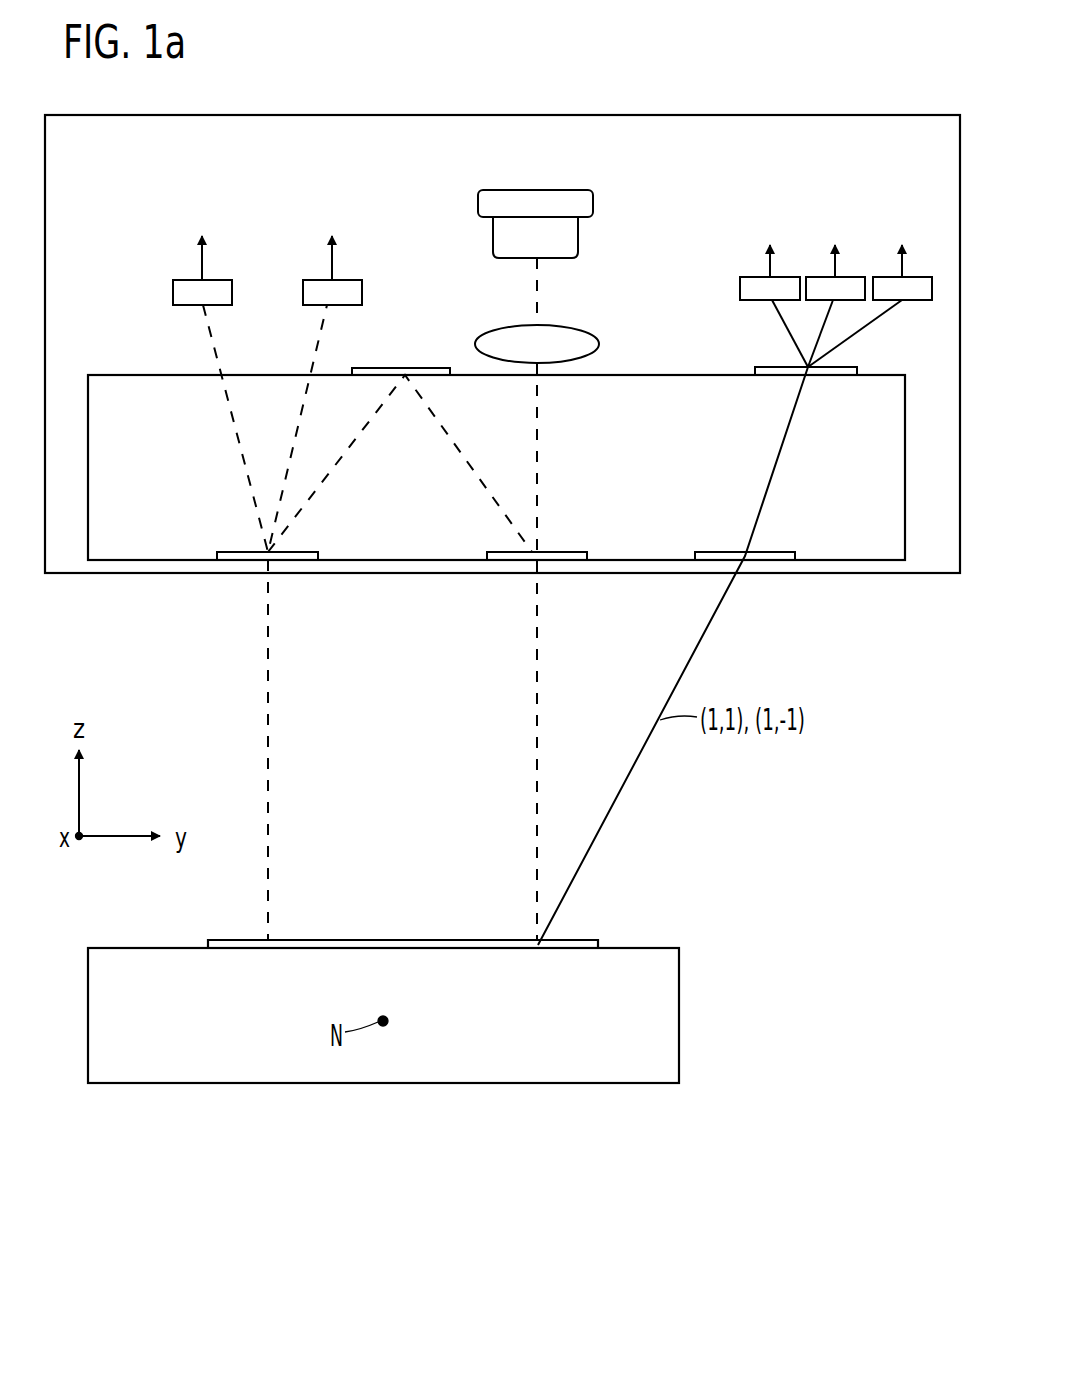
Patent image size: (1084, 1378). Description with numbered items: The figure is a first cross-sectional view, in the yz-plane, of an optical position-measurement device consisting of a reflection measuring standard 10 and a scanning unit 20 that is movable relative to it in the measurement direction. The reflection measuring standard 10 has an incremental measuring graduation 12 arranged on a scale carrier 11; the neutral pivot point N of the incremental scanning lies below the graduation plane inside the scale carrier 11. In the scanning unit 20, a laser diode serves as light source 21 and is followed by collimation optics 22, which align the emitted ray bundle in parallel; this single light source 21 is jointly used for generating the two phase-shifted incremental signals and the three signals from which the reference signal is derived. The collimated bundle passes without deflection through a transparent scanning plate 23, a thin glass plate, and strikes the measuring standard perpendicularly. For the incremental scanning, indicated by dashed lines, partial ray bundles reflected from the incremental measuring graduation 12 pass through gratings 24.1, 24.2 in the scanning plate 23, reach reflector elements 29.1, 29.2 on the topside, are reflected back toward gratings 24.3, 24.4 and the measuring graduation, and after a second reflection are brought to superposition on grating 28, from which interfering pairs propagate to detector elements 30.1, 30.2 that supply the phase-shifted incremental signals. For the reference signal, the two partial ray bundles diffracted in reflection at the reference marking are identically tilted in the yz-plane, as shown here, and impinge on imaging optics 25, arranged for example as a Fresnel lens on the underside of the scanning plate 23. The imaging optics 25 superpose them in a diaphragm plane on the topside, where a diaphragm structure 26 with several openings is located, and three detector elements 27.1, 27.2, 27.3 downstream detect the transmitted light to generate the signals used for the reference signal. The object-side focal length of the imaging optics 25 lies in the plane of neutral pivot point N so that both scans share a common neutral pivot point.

The reflection measuring standard 10 is at (140, 1130).
The scale carrier 11 is at (667, 1004).
The incremental measuring graduation 12 is at (590, 940).
The scanning unit 20 is at (655, 115).
The light source 21 is at (563, 200).
The collimation optics 22 is at (577, 340).
The scanning plate 23 is at (892, 485).
The grating 24.1 is at (562, 589).
The grating 24.2 is at (545, 560).
The grating 24.3 is at (267, 556).
The grating 24.4 is at (277, 560).
The imaging optics 25 is at (750, 560).
The diaphragm structure 26 is at (760, 367).
The detector element 27.1 is at (818, 287).
The detector element 27.2 is at (885, 287).
The detector element 27.3 is at (750, 287).
The grating 28 is at (293, 603).
The reflector element 29.1 is at (410, 340).
The reflector element 29.2 is at (420, 368).
The detector element 30.1 is at (180, 292).
The detector element 30.2 is at (311, 292).